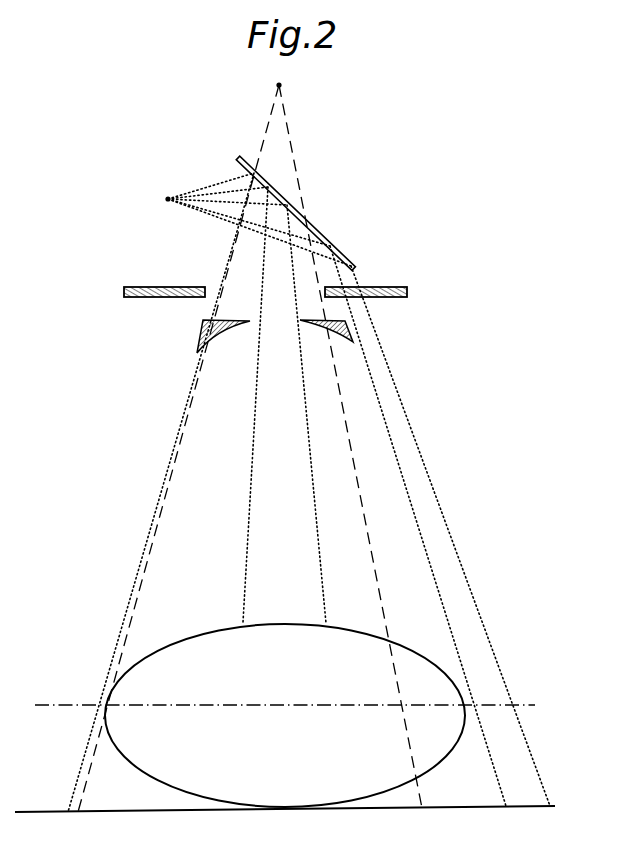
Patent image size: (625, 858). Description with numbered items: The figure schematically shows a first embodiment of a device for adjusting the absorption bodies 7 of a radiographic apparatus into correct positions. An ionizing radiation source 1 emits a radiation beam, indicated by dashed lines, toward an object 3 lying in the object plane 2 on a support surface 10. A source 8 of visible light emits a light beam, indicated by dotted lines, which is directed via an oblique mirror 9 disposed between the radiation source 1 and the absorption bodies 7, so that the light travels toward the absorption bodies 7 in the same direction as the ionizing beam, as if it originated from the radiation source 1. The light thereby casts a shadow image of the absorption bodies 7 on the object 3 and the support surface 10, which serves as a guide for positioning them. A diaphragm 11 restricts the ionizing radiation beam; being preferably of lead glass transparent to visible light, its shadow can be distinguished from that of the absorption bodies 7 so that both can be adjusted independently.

The ionizing radiation source 1 is at (281, 85).
The object plane 2 is at (60, 705).
The object 3 is at (428, 760).
The absorption bodies 7 is at (223, 334).
The source of visible light 8 is at (168, 197).
The oblique mirror 9 is at (327, 242).
The support surface 10 is at (137, 812).
The diaphragm 11 is at (168, 286).